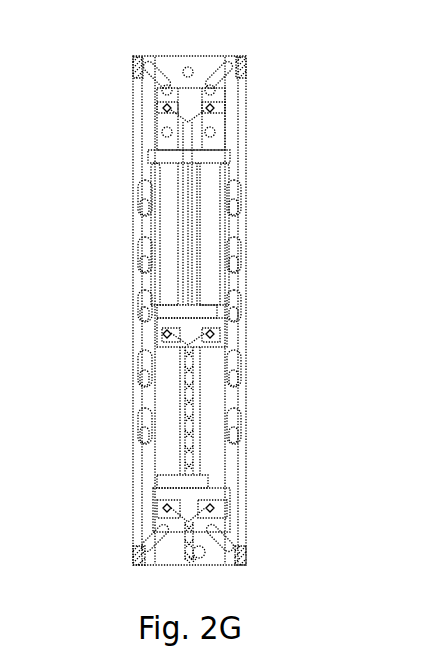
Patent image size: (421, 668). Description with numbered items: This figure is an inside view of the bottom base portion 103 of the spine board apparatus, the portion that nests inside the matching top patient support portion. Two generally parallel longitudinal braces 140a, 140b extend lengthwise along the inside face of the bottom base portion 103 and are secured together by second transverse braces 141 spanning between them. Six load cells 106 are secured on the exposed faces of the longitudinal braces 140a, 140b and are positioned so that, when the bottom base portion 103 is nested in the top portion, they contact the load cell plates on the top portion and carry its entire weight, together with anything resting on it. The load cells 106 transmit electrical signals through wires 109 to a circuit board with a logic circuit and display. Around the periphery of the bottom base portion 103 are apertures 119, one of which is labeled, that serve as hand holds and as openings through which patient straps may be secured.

The bottom base portion 103 is at (240, 398).
The load cell 106 is at (165, 108).
The wire 109 is at (201, 558).
The aperture 119 is at (148, 432).
The longitudinal brace 140a is at (210, 232).
The longitudinal brace 140b is at (165, 232).
The second transverse brace 141 is at (207, 151).